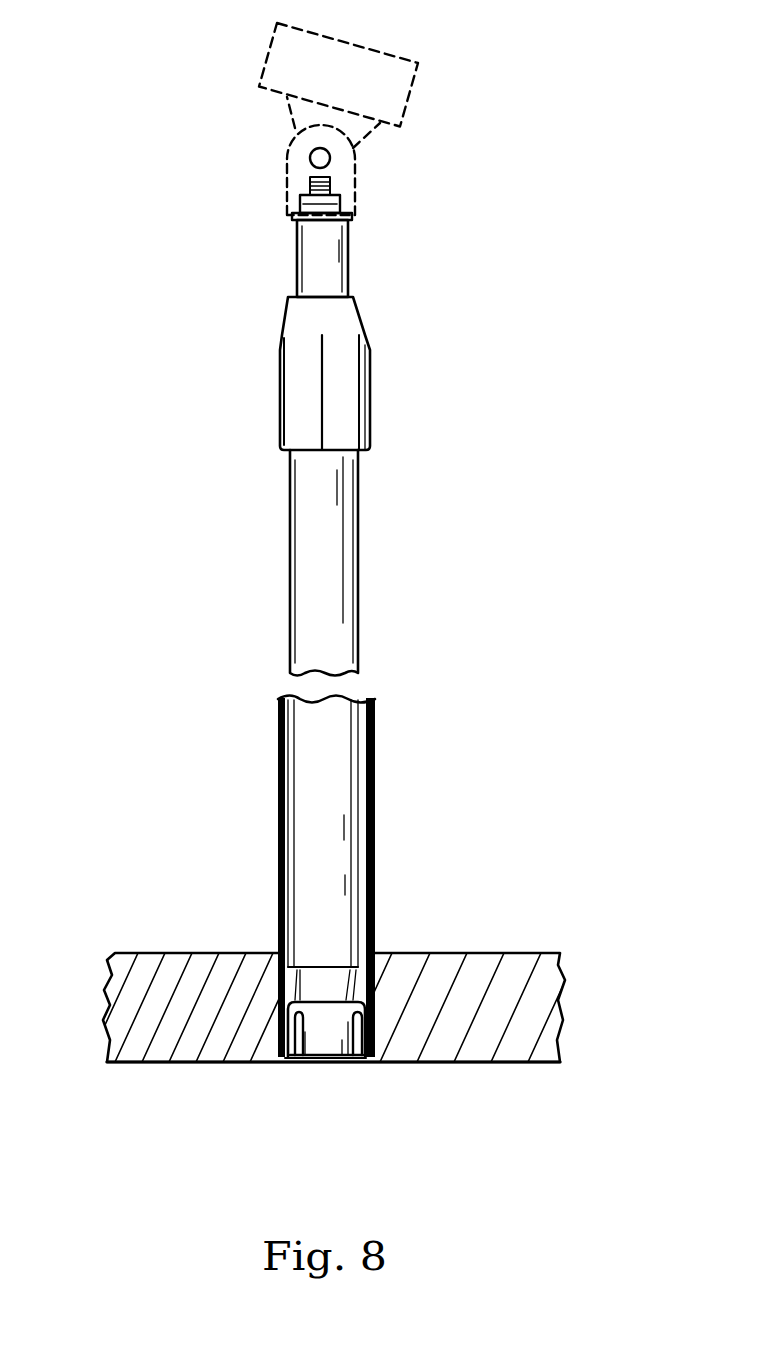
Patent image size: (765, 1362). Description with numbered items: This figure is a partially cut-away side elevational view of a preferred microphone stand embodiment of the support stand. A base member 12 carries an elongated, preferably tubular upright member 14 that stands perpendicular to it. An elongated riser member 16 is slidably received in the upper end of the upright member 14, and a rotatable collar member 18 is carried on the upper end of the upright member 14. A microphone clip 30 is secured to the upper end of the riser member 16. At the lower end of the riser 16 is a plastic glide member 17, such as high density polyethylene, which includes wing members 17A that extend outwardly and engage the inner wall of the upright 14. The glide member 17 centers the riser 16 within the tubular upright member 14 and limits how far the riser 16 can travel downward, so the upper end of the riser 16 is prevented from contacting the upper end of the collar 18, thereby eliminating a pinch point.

The base member 12 is at (222, 963).
The upright member 14 is at (360, 597).
The riser member 16 is at (297, 260).
The glide member 17 is at (305, 1000).
The wing members 17A is at (286, 1035).
The collar member 18 is at (281, 372).
The microphone clip 30 is at (364, 169).